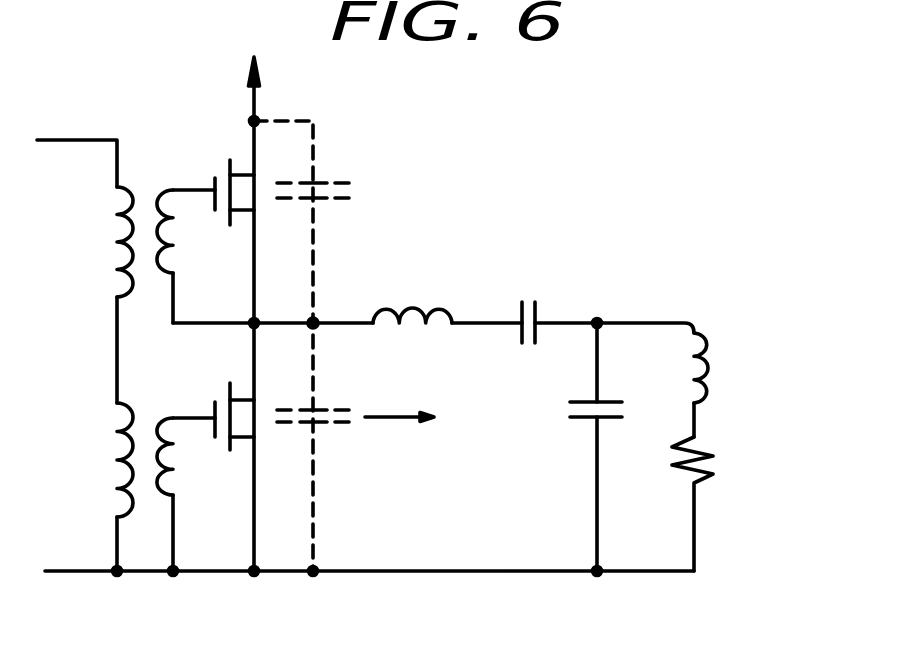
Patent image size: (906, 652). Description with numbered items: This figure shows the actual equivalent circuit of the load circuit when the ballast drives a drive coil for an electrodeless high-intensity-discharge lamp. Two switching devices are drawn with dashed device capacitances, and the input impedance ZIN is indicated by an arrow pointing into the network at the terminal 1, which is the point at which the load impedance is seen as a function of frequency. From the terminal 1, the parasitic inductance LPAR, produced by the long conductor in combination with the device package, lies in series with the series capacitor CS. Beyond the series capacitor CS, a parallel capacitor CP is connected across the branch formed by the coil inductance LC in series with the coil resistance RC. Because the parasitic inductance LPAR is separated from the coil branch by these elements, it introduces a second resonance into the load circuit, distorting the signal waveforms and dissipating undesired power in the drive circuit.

The terminal 1 is at (316, 318).
The parasitic inductance LPAR is at (447, 295).
The series capacitor CS is at (554, 304).
The parallel capacitor CP is at (567, 447).
The load inductance LC is at (677, 380).
The load resistance RC is at (716, 504).
The input impedance ZIN is at (399, 435).